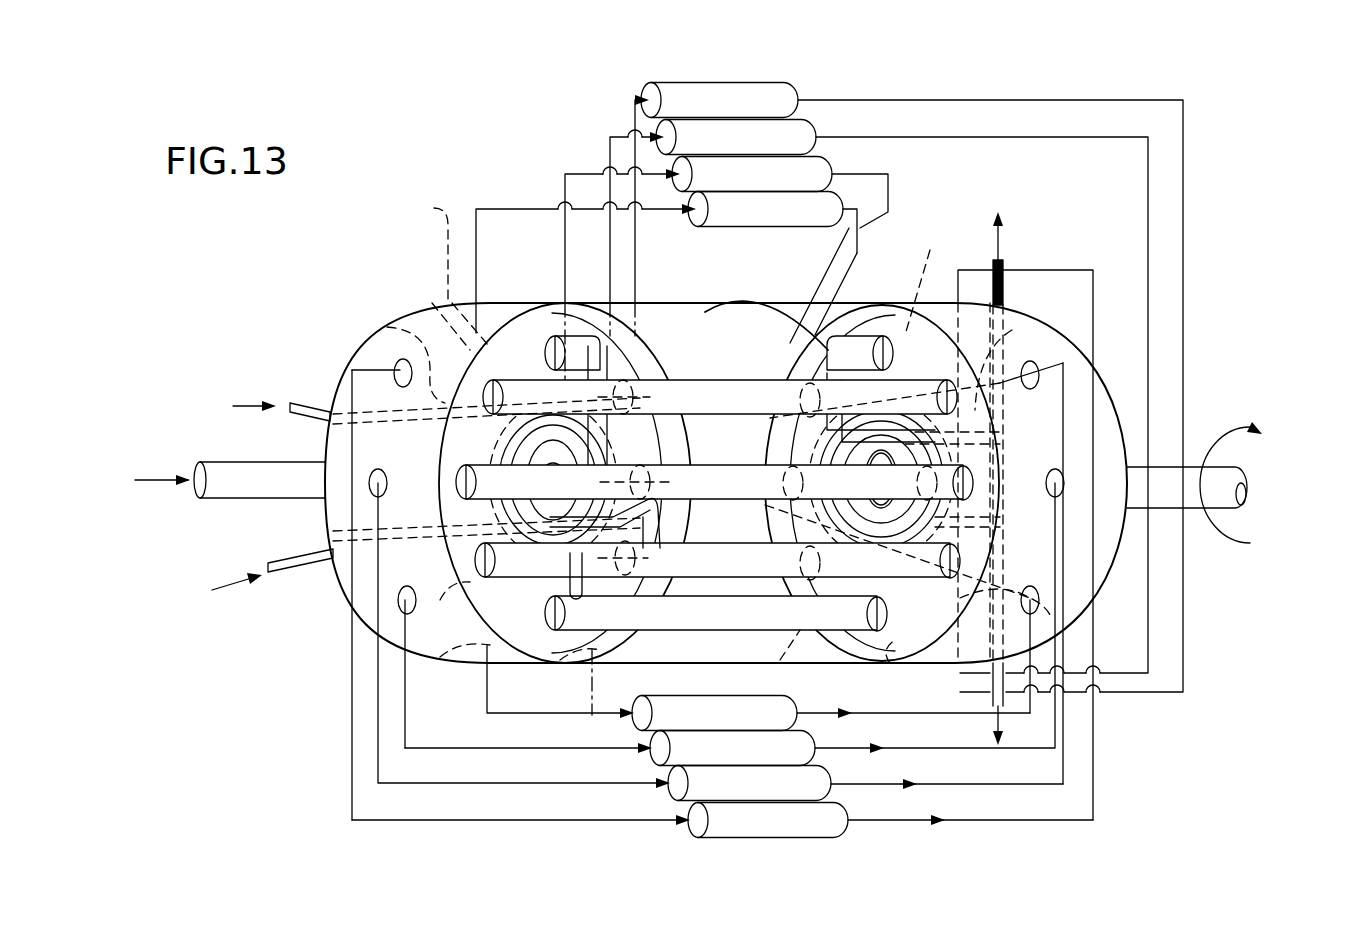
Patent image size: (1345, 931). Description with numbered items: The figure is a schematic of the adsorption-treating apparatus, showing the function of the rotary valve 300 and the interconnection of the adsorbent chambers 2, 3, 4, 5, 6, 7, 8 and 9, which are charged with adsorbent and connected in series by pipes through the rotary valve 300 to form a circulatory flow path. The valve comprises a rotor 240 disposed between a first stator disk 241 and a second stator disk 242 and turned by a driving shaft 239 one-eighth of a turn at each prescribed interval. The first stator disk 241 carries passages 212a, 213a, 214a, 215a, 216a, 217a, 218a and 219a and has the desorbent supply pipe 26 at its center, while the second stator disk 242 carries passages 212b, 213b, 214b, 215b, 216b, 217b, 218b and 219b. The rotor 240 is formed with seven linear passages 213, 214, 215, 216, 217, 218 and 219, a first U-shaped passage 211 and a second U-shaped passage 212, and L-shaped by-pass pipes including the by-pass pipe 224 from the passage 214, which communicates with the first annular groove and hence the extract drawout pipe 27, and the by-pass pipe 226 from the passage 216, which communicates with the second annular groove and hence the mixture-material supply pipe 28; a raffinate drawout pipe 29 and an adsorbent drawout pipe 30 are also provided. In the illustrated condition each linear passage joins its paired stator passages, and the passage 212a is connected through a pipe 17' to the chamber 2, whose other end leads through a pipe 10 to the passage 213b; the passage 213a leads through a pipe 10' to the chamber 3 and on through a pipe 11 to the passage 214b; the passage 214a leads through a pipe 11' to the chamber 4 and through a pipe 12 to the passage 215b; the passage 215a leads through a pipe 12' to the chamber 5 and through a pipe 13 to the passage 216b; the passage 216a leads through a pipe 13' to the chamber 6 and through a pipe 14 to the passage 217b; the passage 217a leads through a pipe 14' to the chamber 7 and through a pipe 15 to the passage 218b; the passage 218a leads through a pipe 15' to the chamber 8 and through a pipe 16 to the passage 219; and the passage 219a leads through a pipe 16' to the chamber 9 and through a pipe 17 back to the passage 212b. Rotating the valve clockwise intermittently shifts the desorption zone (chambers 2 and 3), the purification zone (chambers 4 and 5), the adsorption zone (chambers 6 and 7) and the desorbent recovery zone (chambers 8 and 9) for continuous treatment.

The adsorbent chamber 2 is at (769, 221).
The adsorbent chamber 3 is at (753, 186).
The adsorbent chamber 4 is at (739, 149).
The adsorbent chamber 5 is at (725, 112).
The adsorbent chamber 6 is at (718, 725).
The adsorbent chamber 7 is at (731, 760).
The adsorbent chamber 8 is at (750, 795).
The adsorbent chamber 9 is at (770, 832).
The pipe 10 is at (840, 285).
The pipe 11 is at (883, 206).
The pipe 12 is at (982, 369).
The pipe 13 is at (990, 372).
The pipe 14 is at (913, 727).
The pipe 15 is at (935, 633).
The pipe 16 is at (947, 799).
The pipe 17 is at (970, 837).
The pipe 10' is at (601, 218).
The pipe 11' is at (609, 199).
The pipe 12' is at (623, 179).
The pipe 13' is at (544, 696).
The pipe 14' is at (528, 761).
The pipe 15' is at (524, 649).
The pipe 16' is at (521, 840).
The pipe 17' is at (586, 233).
The desorbent supply pipe 26 is at (228, 465).
The extract drawout pipe 27 is at (320, 400).
The mixture-material supply pipe 28 is at (275, 565).
The raffinate drawout pipe 29 is at (1000, 715).
The adsorbent drawout pipe 30 is at (1008, 262).
The first U-shaped passage 211 is at (592, 336).
The second U-shaped passage 212 is at (815, 296).
The passage 212a is at (414, 246).
The passage 212b is at (947, 443).
The linear passage 213 is at (640, 335).
The passage 213a is at (450, 300).
The passage 213b is at (740, 312).
The linear passage 214 is at (745, 440).
The passage 214a is at (668, 436).
The passage 214b is at (760, 500).
The linear passage 215 is at (750, 580).
The passage 215a is at (575, 665).
The passage 215b is at (815, 650).
The linear passage 216 is at (712, 650).
The passage 216a is at (440, 605).
The passage 216b is at (905, 660).
The linear passage 217 is at (630, 655).
The passage 217a is at (350, 607).
The passage 217b is at (1090, 609).
The linear passage 218 is at (885, 470).
The passage 218a is at (335, 516).
The passage 218b is at (1015, 470).
The linear passage 219 is at (700, 405).
The passage 219a is at (388, 325).
The passage 219b is at (1010, 318).
The L-shaped by-pass pipe 224 is at (662, 540).
The L-shaped by-pass pipe 226 is at (568, 575).
The driving shaft 239 is at (1242, 510).
The rotor 240 is at (592, 705).
The first stator disk 241 is at (430, 672).
The second stator disk 242 is at (1068, 320).
The rotary valve 300 is at (1120, 643).